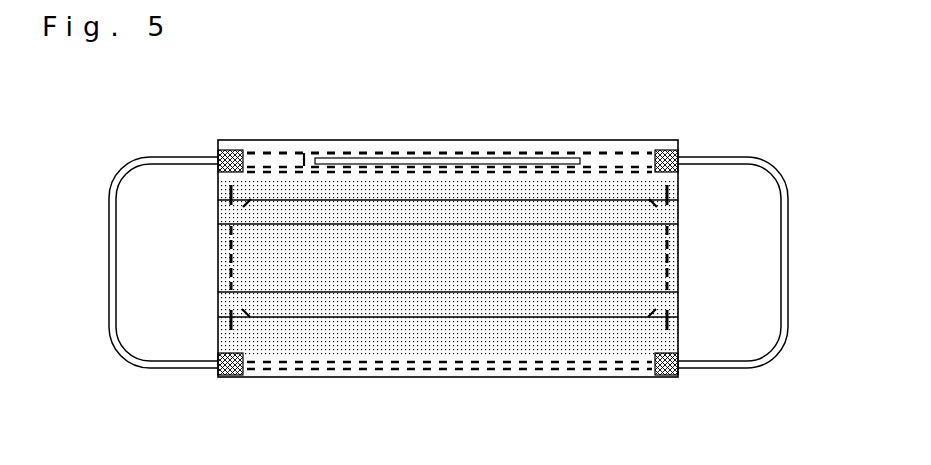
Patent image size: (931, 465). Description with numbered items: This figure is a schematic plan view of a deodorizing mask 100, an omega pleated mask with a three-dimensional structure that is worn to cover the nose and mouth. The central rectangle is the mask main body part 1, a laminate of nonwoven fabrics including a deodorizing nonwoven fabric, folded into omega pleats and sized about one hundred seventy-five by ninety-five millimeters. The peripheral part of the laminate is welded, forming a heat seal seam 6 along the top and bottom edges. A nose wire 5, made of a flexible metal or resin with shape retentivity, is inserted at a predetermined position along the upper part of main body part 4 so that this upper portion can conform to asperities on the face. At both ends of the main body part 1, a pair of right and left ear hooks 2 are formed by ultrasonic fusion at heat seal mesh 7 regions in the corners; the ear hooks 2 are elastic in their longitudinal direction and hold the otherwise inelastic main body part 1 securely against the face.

The deodorizing mask 100 is at (742, 123).
The mask main body part 1 is at (380, 335).
The ear hook 2 is at (190, 364).
The upper part of main body part 4 is at (478, 150).
The nose wire 5 is at (352, 158).
The heat seal seam 6 is at (425, 157).
The heat seal mesh 7 is at (672, 160).